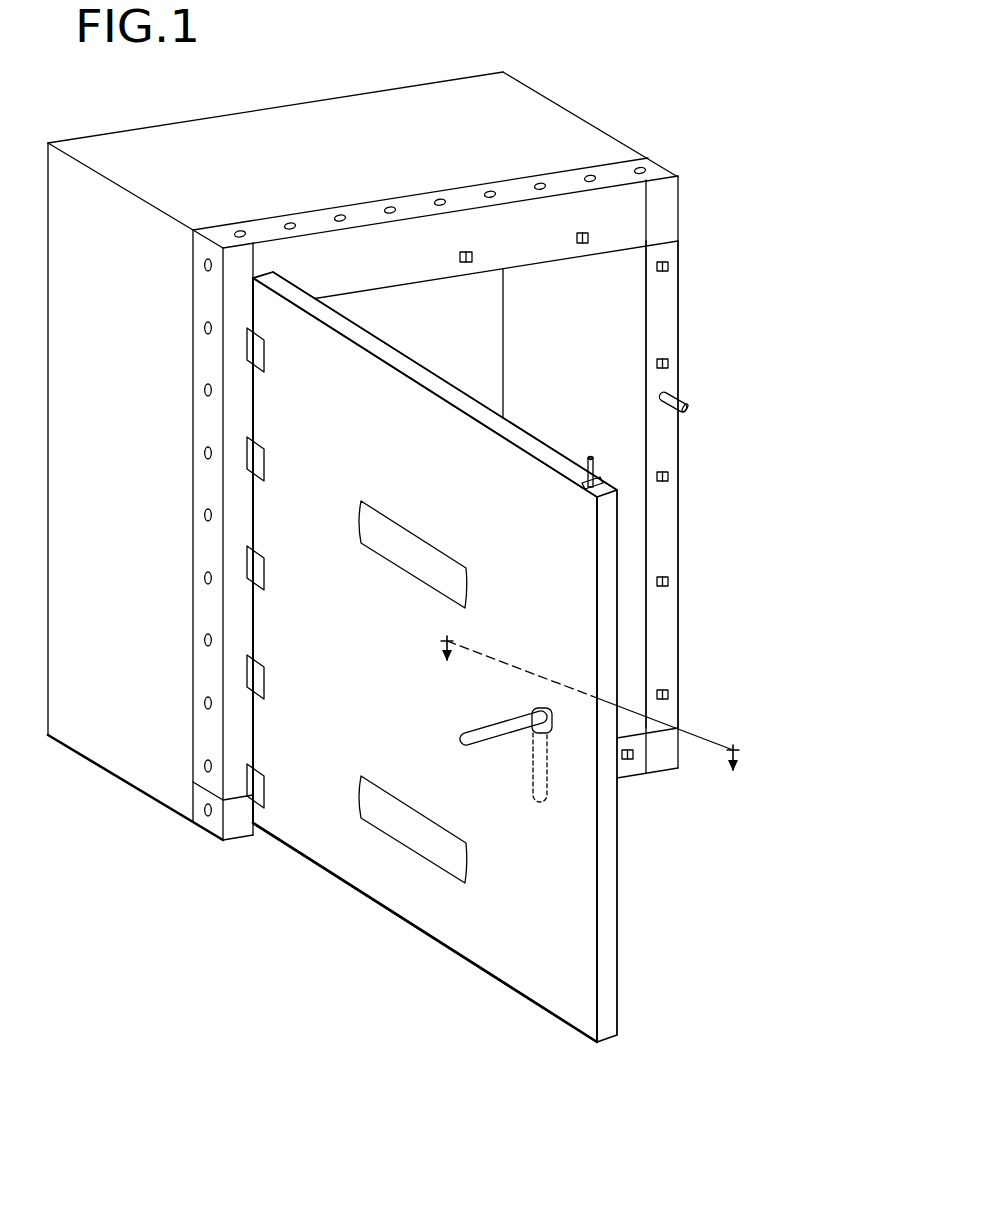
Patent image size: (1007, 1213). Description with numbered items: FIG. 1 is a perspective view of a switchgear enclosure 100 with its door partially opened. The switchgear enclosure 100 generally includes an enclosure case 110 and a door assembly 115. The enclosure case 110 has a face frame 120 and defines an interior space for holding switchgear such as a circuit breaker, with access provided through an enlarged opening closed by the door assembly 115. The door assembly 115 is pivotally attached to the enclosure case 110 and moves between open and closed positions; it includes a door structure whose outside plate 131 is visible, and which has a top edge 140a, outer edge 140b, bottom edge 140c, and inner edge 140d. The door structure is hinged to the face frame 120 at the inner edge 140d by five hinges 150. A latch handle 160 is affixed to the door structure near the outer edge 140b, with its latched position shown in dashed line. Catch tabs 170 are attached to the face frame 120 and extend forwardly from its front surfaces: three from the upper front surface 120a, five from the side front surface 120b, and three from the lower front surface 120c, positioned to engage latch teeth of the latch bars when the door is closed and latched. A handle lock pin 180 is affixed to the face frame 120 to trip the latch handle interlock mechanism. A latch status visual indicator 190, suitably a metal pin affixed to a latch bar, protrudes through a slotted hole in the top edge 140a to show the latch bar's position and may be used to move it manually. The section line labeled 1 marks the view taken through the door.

The switchgear enclosure 100 is at (709, 108).
The enclosure case 110 is at (125, 492).
The door assembly 115 is at (351, 922).
The face frame 120 is at (665, 207).
The upper front surface 120a is at (555, 243).
The side front surface 120b is at (662, 518).
The lower front surface 120c is at (657, 758).
The outside plate 131 is at (358, 672).
The top edge 140a is at (456, 395).
The outer edge 140b is at (607, 947).
The bottom edge 140c is at (507, 985).
The inner edge 140d is at (253, 722).
The hinge 150 is at (255, 349).
The latch handle 160 is at (487, 733).
The catch tab 170 is at (670, 273).
The handle lock pin 180 is at (677, 400).
The latch status visual indicator 190 is at (596, 460).
The section line 1- 1 is at (590, 697).